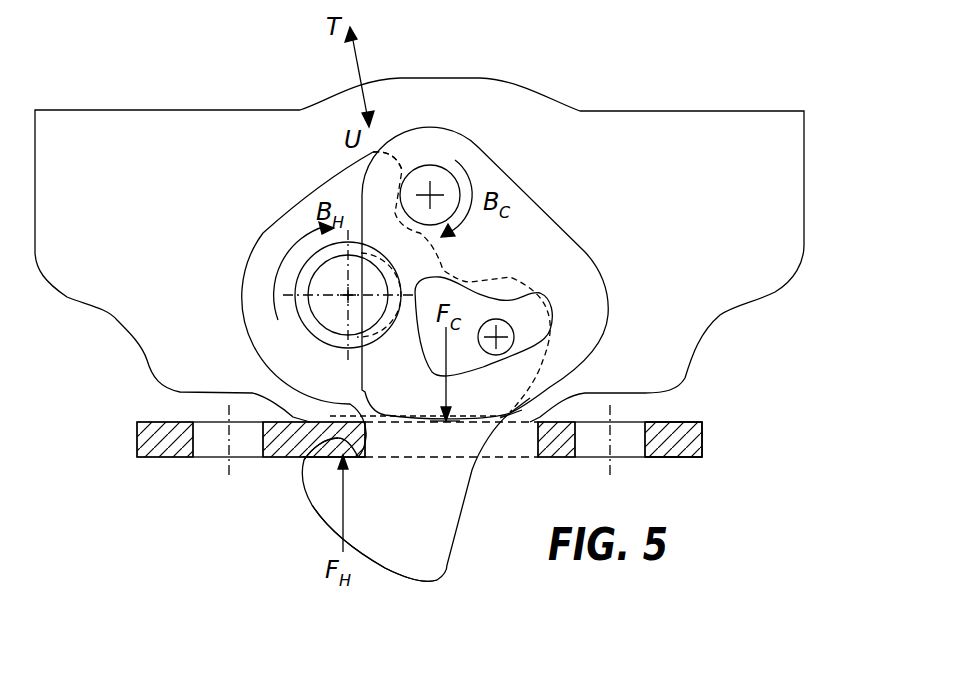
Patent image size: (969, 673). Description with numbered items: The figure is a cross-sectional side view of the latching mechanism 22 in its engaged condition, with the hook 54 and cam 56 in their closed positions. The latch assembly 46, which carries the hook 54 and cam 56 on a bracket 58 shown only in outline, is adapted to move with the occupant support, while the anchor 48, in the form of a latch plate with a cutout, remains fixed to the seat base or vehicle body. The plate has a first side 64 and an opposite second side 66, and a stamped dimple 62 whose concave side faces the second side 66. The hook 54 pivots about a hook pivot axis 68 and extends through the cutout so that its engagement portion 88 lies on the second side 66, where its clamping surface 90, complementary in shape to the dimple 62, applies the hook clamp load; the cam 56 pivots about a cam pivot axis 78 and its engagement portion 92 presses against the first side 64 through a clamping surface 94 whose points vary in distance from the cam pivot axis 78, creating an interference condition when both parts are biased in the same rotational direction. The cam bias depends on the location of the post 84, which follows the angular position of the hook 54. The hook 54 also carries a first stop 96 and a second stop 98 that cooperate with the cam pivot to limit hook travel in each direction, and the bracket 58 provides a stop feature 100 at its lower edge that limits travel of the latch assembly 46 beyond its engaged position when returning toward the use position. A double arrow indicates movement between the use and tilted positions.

The latching mechanism 22 is at (112, 72).
The bracket 58 is at (222, 110).
The latch assembly 46 is at (100, 321).
The anchor 48 is at (152, 476).
The first side 64 is at (680, 422).
The second side 66 is at (658, 457).
The dimple 62 is at (303, 457).
The hook 54 is at (260, 237).
The engagement portion 88 is at (387, 543).
The clamping surface 90 is at (320, 465).
The hook pivot axis 68 is at (352, 298).
The cam 56 is at (548, 220).
The cam pivot axis 78 is at (432, 193).
The first stop 96 is at (405, 170).
The second stop 98 is at (470, 282).
The post 84 is at (510, 330).
The clamping surface 94 is at (446, 425).
The engagement portion 92 is at (512, 416).
The stop feature 100 is at (520, 416).